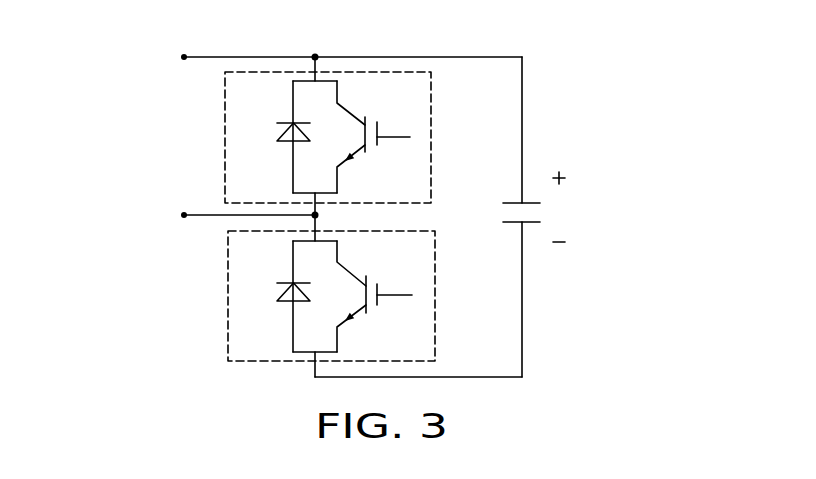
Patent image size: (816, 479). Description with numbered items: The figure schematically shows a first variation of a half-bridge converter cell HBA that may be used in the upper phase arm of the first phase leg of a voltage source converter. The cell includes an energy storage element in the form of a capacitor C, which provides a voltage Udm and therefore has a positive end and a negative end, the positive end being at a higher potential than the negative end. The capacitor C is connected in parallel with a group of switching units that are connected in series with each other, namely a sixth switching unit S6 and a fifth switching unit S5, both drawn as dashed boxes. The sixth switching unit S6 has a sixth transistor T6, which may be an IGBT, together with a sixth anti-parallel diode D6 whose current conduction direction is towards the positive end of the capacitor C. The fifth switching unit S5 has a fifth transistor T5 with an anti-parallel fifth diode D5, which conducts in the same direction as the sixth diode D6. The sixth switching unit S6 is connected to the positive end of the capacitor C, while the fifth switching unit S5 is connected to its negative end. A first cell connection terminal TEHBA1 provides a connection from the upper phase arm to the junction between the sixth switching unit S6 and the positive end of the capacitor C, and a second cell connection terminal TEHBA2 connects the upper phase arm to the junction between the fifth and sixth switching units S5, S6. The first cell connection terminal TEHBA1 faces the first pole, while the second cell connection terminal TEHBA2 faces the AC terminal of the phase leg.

The half-bridge converter cell HBA is at (565, 91).
The first cell connection terminal TEHBA1 is at (192, 61).
The second cell connection terminal TEHBA2 is at (192, 211).
The sixth switching unit S6 is at (430, 160).
The sixth anti-parallel diode D6 is at (280, 137).
The sixth transistor T6 is at (373, 137).
The fifth switching unit S5 is at (433, 327).
The fifth diode D5 is at (276, 296).
The fifth transistor T5 is at (374, 296).
The capacitor C is at (504, 211).
The voltage Udm is at (577, 207).